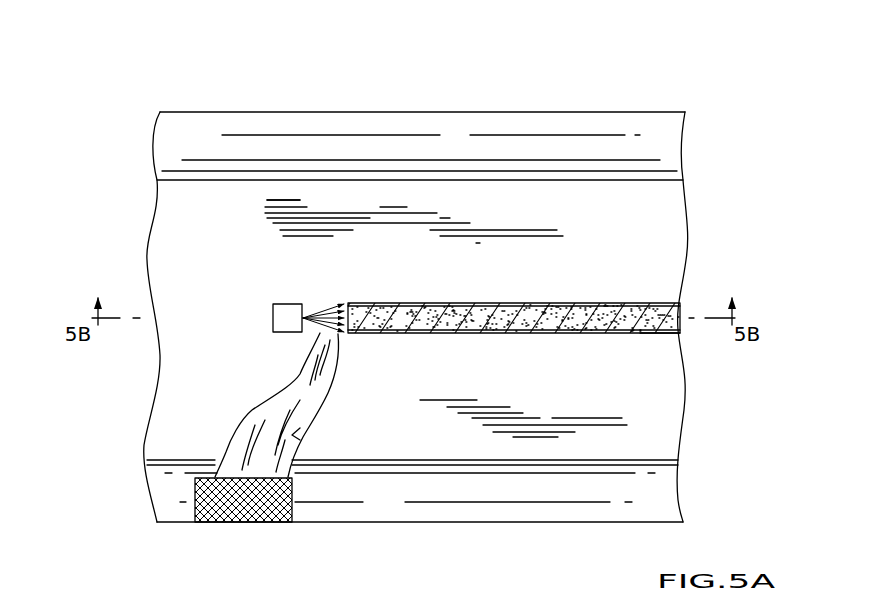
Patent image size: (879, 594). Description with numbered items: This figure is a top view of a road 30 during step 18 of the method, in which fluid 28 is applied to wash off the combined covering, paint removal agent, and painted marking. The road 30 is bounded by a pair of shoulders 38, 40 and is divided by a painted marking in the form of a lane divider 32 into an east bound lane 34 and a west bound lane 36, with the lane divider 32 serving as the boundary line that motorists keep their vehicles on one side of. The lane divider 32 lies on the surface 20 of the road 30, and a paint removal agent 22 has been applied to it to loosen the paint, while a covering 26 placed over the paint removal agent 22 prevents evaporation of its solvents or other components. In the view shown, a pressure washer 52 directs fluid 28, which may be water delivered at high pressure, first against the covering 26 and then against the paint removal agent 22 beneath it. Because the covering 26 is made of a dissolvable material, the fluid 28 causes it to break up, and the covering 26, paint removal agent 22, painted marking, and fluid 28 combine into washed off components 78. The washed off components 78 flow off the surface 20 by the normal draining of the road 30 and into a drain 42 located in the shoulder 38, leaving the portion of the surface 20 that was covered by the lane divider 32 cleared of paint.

The step 18 is at (275, 77).
The surface 20 is at (273, 243).
The paint removal agent 22 is at (492, 334).
The covering 26 is at (568, 303).
The fluid 28 is at (318, 298).
The road 30 is at (680, 82).
The lane divider 32 is at (653, 334).
The east bound lane 34 is at (397, 401).
The west bound lane 36 is at (397, 251).
The shoulder 38 is at (397, 503).
The shoulder 40 is at (467, 146).
The drain 42 is at (232, 520).
The pressure washer 52 is at (273, 319).
The washed off components 78 is at (298, 431).